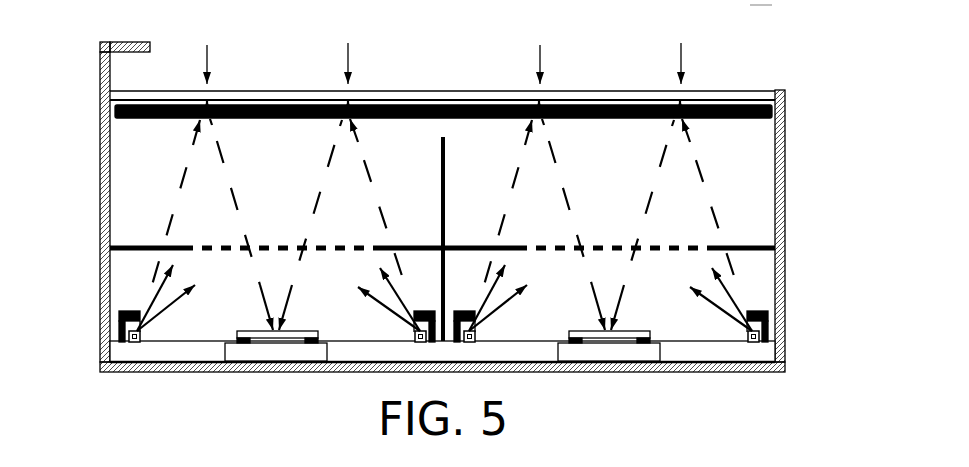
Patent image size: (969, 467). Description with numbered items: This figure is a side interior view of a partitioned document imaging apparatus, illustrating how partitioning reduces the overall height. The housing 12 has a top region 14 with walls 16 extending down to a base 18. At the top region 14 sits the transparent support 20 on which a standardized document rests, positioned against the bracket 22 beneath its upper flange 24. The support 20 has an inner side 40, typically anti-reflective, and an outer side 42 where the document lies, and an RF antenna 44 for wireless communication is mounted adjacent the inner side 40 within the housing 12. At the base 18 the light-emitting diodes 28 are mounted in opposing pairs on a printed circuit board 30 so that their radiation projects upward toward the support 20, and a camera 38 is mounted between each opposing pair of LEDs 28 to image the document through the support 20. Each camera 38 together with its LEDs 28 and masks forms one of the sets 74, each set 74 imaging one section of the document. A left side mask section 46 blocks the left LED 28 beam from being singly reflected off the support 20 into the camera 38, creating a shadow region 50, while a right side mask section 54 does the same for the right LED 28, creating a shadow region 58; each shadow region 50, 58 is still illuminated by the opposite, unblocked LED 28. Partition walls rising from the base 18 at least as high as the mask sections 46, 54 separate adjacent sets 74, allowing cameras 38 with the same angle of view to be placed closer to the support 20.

The housing 12 is at (784, 110).
The top region 14 is at (748, 65).
The walls 16 is at (100, 170).
The base 18 is at (220, 371).
The support 20 is at (415, 98).
The bracket 22 is at (100, 52).
The upper flange 24 is at (142, 43).
The light-emitting diodes 28 is at (135, 341).
The printed circuit board 30 is at (370, 343).
The camera 38 is at (255, 350).
The inner side 40 is at (373, 98).
The outer side 42 is at (466, 92).
The RF antenna 44 is at (243, 106).
The left side mask section 46 is at (122, 246).
The shadow region 50 is at (373, 53).
The right side mask section 54 is at (431, 247).
The shadow region 58 is at (514, 53).
The sets 74 is at (762, 5).